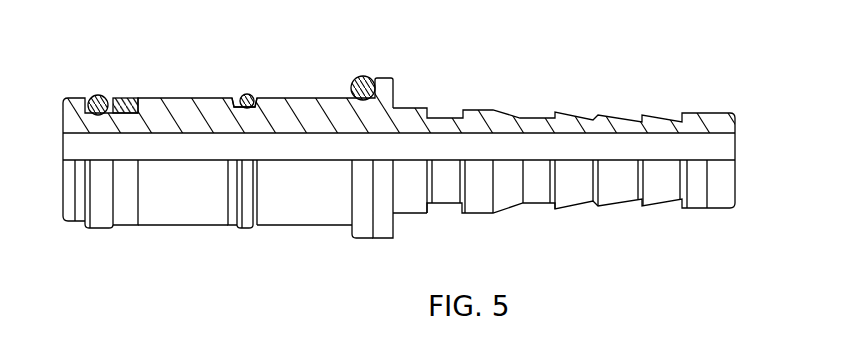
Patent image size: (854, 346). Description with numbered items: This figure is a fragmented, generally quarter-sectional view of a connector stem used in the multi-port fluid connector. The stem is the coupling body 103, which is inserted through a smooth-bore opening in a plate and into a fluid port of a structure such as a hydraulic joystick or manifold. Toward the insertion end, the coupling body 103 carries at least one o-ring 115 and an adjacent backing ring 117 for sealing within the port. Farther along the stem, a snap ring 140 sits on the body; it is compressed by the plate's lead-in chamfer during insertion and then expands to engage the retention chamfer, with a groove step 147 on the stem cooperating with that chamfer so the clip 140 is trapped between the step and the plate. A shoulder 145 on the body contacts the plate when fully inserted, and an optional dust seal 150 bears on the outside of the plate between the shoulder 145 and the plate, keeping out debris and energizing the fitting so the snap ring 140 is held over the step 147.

The coupling body 103 is at (235, 288).
The o-ring 115 is at (100, 93).
The backing ring 117 is at (128, 96).
The snap ring 140 is at (253, 93).
The shoulder 145 is at (390, 87).
The groove step 147 is at (235, 92).
The dust seal 150 is at (364, 75).